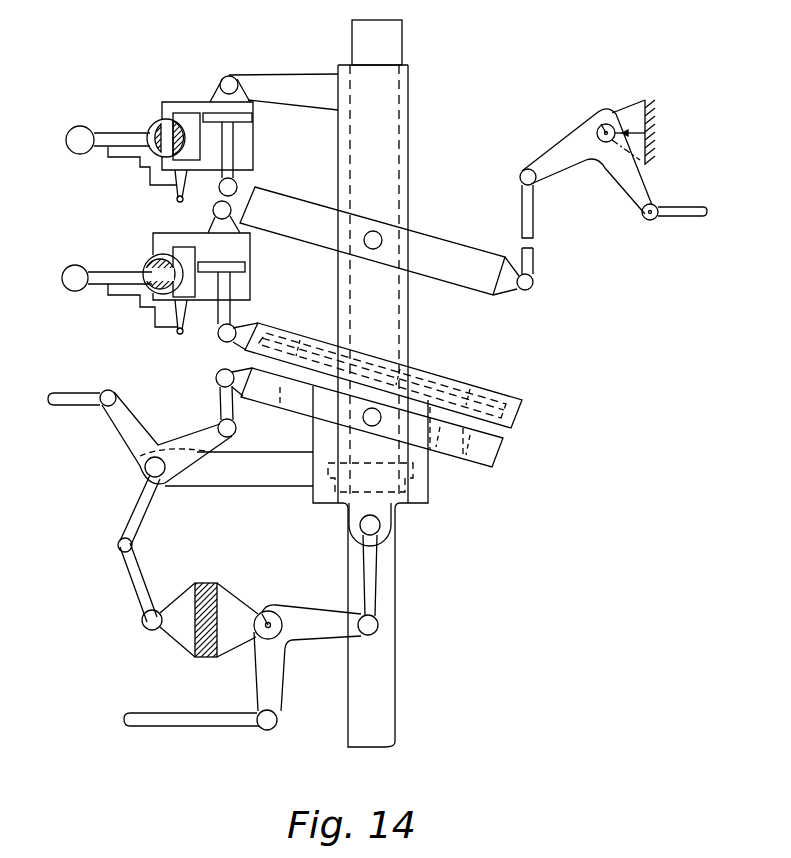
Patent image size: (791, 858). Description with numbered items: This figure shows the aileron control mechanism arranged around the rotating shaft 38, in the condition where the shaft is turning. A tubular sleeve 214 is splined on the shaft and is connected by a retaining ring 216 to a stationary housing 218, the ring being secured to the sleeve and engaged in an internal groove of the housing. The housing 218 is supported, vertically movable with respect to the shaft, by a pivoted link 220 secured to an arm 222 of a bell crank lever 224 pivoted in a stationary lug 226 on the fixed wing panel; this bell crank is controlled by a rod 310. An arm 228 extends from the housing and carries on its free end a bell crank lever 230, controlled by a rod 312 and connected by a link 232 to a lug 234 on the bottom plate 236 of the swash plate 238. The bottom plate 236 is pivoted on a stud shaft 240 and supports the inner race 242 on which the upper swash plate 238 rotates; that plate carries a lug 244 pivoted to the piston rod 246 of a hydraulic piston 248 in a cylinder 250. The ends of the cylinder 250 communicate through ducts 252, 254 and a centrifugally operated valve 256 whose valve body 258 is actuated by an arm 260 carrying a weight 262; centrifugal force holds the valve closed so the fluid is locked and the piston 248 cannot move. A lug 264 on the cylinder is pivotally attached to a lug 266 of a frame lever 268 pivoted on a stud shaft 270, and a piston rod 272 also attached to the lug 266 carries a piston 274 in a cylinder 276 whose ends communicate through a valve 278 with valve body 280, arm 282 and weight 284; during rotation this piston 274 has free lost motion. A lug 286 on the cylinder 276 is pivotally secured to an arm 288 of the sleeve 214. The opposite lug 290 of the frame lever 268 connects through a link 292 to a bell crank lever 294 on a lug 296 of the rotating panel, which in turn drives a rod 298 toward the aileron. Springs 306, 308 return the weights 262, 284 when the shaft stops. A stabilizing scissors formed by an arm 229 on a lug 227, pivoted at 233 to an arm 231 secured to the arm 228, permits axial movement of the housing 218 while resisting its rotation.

The shaft 38 is at (398, 658).
The sleeve 214 is at (410, 326).
The retaining ring 216 is at (415, 470).
The stationary housing 218 is at (430, 500).
The pivoted link 220 is at (378, 580).
The arm 222 is at (318, 634).
The bell crank lever 224 is at (257, 687).
The stationary lug 226 is at (233, 594).
The lug 227 is at (173, 640).
The arm 228 is at (238, 486).
The arm 229 is at (128, 582).
The bell crank lever 230 is at (128, 446).
The arm 231 is at (133, 515).
The link 232 is at (216, 397).
The pivot 233 is at (116, 550).
The lug 234 is at (243, 370).
The bottom plate 236 is at (504, 454).
The swash plate 238 is at (522, 410).
The stud shaft 240 is at (364, 421).
The inner race 242 is at (506, 384).
The lug 244 is at (258, 330).
The piston rod 246 is at (215, 330).
The hydraulic piston 248 is at (247, 266).
The cylinder 250 is at (242, 245).
The duct 252 is at (153, 238).
The duct 254 is at (207, 304).
The centrifugally operated valve 256 is at (150, 258).
The valve body 258 is at (143, 296).
The arm 260 is at (113, 270).
The weight 262 is at (66, 267).
The lug 264 is at (211, 217).
The lug 266 is at (243, 185).
The frame lever 268 is at (448, 244).
The stud shaft 270 is at (380, 234).
The piston rod 272 is at (245, 170).
The piston 274 is at (252, 118).
The cylinder 276 is at (252, 143).
The valve 278 is at (152, 118).
The valve body 280 is at (130, 162).
The arm 282 is at (122, 132).
The weight 284 is at (73, 126).
The lug 286 is at (212, 98).
The arm 288 is at (310, 78).
The lug 290 is at (509, 292).
The link 292 is at (538, 224).
The bell crank lever 294 is at (582, 162).
The lug 296 is at (657, 128).
The rod 298 is at (691, 216).
The spring 306 is at (162, 325).
The spring 308 is at (153, 177).
The rod 310 is at (170, 728).
The rod 312 is at (75, 396).